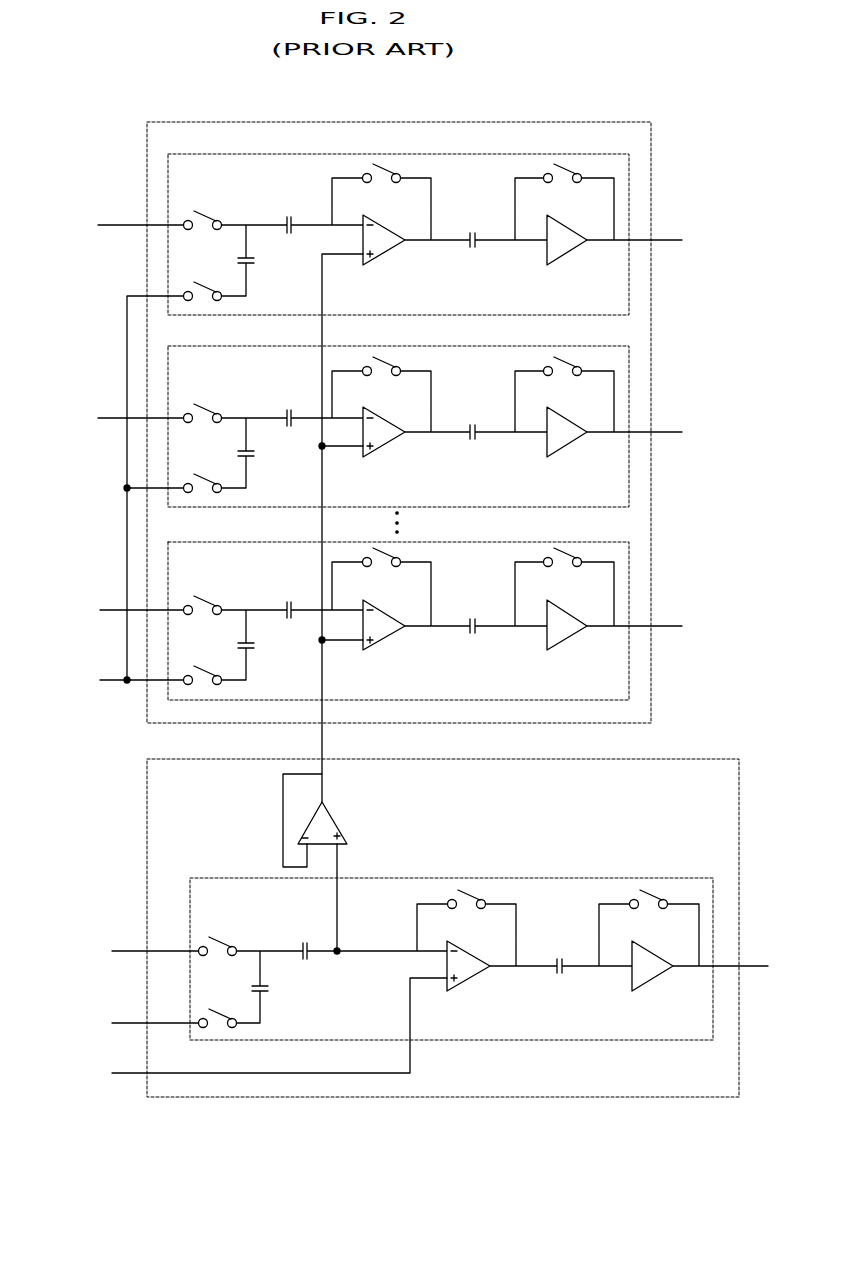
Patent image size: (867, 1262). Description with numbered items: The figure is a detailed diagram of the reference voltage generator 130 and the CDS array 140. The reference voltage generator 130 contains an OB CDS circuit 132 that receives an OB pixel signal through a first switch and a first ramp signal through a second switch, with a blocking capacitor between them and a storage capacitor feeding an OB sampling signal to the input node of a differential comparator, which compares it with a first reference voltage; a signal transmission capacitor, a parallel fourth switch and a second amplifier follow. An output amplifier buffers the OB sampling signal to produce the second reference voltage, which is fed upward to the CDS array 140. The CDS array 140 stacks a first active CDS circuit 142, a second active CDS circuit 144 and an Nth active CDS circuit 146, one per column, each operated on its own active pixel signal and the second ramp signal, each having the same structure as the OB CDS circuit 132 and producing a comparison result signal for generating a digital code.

The reference voltage generator 130 is at (703, 759).
The OB CDS circuit 132 is at (687, 879).
The CDS array 140 is at (617, 123).
The first active CDS circuit 142 is at (596, 155).
The second active CDS circuit 144 is at (596, 347).
The Nth active CDS circuit 146 is at (595, 542).